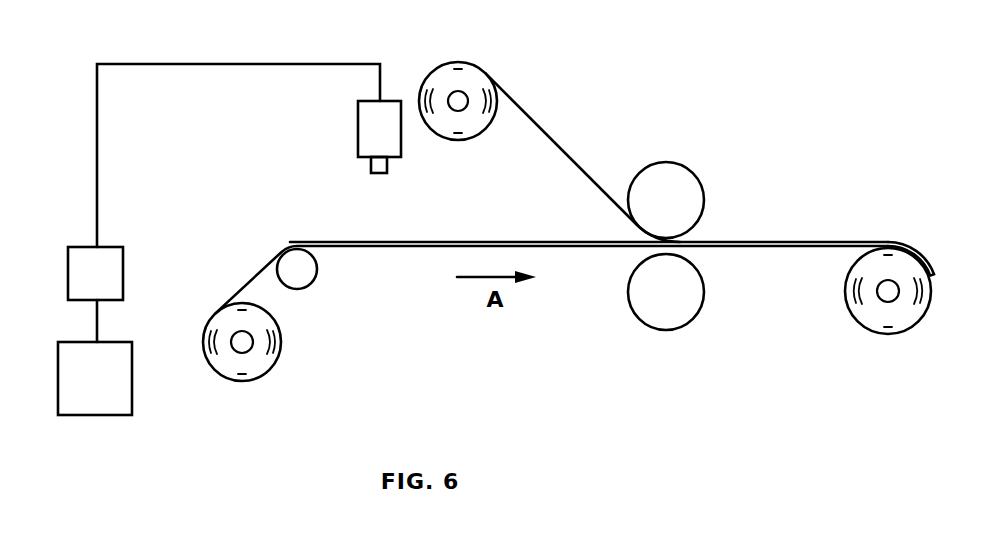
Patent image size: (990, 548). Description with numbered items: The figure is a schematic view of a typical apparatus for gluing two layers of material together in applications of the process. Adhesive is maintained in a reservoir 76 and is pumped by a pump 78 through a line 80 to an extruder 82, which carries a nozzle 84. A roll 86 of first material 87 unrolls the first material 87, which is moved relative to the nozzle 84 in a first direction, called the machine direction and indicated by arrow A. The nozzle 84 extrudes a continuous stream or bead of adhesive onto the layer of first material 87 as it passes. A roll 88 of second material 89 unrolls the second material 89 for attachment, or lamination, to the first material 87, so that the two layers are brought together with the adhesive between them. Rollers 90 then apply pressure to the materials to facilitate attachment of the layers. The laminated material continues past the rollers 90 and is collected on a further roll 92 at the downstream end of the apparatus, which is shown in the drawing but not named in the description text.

The reservoir 76 is at (108, 415).
The pump 78 is at (123, 262).
The line 80 is at (193, 64).
The extruder 82 is at (358, 122).
The nozzle 84 is at (387, 165).
The roll of first material 86 is at (257, 378).
The first material 87 is at (347, 249).
The roll of second material 88 is at (463, 63).
The second material 89 is at (553, 140).
The rollers 90 is at (675, 162).
The take-up roll 92 is at (928, 272).